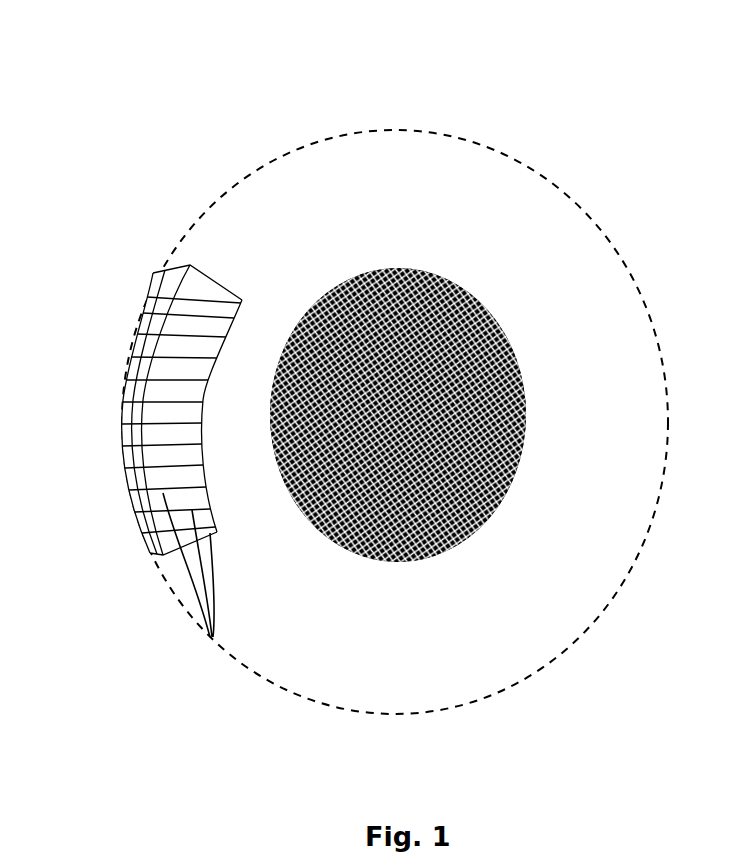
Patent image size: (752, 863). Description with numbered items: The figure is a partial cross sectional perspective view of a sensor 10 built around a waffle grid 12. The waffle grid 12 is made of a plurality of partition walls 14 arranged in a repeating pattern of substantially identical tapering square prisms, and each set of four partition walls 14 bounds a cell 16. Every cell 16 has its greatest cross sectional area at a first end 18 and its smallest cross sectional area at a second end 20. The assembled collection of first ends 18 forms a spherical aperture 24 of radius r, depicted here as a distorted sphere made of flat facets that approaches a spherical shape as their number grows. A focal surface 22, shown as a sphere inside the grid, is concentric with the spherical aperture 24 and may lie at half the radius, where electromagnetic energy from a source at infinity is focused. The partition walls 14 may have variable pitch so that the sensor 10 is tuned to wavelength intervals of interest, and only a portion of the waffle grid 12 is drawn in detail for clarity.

The sensor 10 is at (357, 46).
The waffle grid 12 is at (144, 358).
The partition walls 14 is at (210, 637).
The cell 16 is at (168, 297).
The first end 18 is at (121, 390).
The second end 20 is at (231, 416).
The focal surface 22 is at (483, 305).
The spherical aperture 24 is at (144, 358).